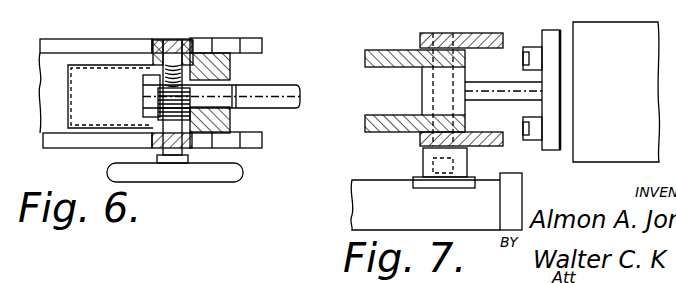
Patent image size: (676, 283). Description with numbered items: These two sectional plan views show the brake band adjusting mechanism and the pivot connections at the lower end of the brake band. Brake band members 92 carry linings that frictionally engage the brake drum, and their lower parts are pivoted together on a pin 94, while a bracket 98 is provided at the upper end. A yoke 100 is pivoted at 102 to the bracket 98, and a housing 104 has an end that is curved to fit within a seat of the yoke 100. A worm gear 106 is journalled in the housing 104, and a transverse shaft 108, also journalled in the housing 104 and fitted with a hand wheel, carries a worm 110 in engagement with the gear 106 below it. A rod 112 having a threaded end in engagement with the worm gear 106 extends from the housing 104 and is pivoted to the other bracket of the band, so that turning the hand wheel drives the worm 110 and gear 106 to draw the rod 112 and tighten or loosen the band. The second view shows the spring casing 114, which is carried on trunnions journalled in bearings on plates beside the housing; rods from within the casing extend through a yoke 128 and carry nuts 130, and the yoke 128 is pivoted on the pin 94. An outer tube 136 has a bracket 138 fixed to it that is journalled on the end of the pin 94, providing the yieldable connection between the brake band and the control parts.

In FIG. 6, the brake band members 92 is at (48, 97).
In FIG. 6, the bracket 98 is at (86, 43).
In FIG. 6, the yoke 100 is at (243, 118).
In FIG. 6, the pivot 102 is at (222, 38).
In FIG. 6, the housing 104 is at (203, 33).
In FIG. 6, the worm gear 106 is at (147, 72).
In FIG. 6, the transverse shaft 108 is at (175, 160).
In FIG. 6, the worm 110 is at (133, 102).
In FIG. 6, the rod 112 is at (287, 80).
In FIG. 7, the pin 94 is at (437, 33).
In FIG. 7, the spring casing 114 is at (616, 92).
In FIG. 7, the yoke 128 is at (467, 92).
In FIG. 7, the nuts 130 is at (533, 122).
In FIG. 7, the outer tube 136 is at (368, 210).
In FIG. 7, the bracket 138 is at (423, 158).